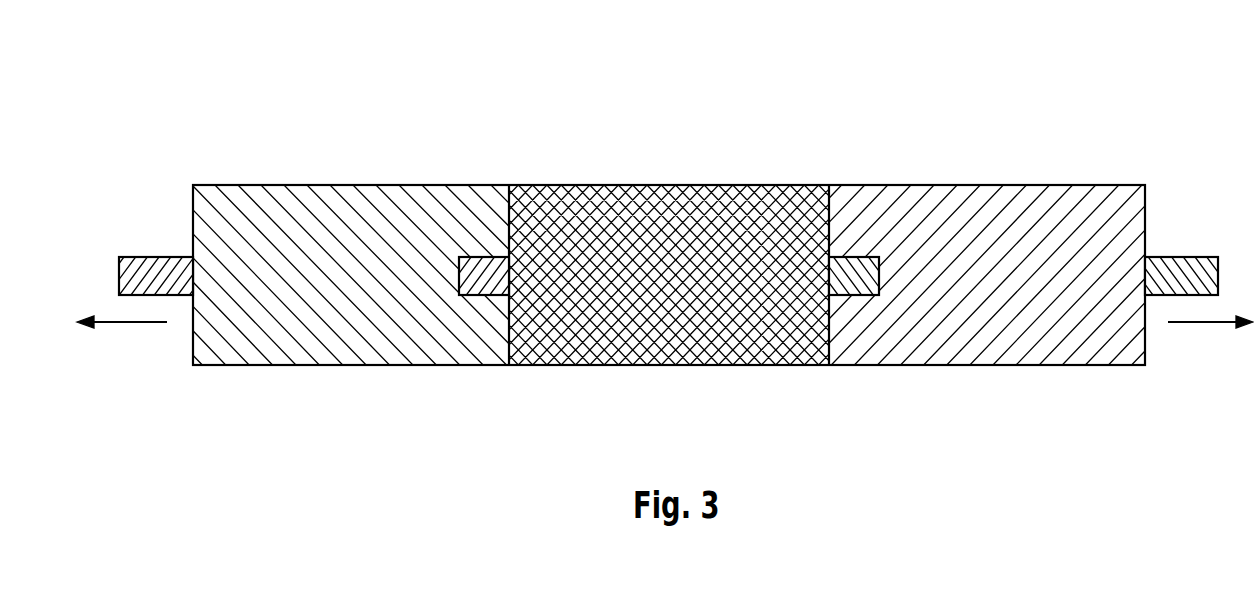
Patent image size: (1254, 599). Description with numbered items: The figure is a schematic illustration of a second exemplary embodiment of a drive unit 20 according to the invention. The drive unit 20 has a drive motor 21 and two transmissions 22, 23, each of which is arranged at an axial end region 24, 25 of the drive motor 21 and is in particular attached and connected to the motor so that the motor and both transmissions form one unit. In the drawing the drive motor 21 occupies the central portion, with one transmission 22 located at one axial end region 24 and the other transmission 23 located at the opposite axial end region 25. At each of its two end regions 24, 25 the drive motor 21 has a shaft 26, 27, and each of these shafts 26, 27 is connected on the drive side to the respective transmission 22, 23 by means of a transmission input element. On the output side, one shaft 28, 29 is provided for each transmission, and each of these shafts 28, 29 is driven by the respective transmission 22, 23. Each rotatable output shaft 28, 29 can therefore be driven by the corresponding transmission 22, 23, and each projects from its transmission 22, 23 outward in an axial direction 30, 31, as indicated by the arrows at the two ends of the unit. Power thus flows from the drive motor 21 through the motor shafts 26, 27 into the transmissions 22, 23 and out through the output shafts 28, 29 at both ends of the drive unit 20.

The drive unit 20 is at (1137, 50).
The drive motor 21 is at (667, 212).
The transmission 22 is at (998, 212).
The transmission 23 is at (298, 212).
The axial end region 24 is at (837, 210).
The axial end region 25 is at (500, 212).
The shaft 26 is at (853, 278).
The shaft 27 is at (480, 277).
The shaft 28 is at (1183, 277).
The shaft 29 is at (146, 275).
The axial direction 30 is at (1210, 326).
The axial direction 31 is at (124, 326).